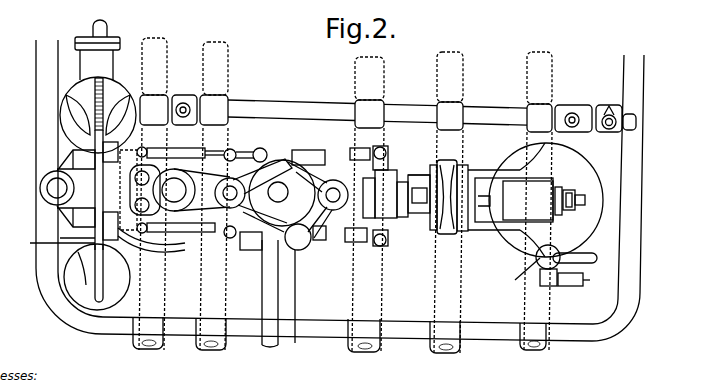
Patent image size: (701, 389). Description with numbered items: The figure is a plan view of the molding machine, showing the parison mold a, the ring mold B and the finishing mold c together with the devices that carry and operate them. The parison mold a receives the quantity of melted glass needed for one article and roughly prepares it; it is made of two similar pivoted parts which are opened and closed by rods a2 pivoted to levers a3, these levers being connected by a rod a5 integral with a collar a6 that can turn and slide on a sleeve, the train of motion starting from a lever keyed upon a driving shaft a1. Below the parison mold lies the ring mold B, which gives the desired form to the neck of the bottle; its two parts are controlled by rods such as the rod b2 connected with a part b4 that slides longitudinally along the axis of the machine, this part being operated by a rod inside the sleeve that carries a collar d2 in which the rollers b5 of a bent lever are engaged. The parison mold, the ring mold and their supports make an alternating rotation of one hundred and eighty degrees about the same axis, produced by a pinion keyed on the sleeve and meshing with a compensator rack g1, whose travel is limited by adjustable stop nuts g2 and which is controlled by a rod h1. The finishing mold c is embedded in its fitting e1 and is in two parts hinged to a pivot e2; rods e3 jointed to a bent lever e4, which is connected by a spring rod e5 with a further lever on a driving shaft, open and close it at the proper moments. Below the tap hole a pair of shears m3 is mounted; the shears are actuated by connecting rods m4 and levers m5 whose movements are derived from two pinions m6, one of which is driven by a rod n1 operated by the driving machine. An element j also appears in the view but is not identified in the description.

The parison mold a is at (286, 160).
The driving shaft a1 is at (337, 243).
The rods a2 is at (325, 253).
The levers a3 is at (418, 170).
The rod a5 is at (432, 178).
The collar a6 is at (470, 166).
The ring mold B is at (360, 165).
The rod b2 is at (368, 244).
The sliding part b4 is at (391, 194).
The rollers b5 is at (566, 202).
The finishing mold c is at (539, 200).
The collar d2 is at (582, 188).
The fitting e1 is at (378, 80).
The pivot e2 is at (458, 78).
The rods e3 is at (160, 62).
The bent lever e4 is at (222, 62).
The spring rod e5 is at (548, 74).
The compensator rack g1 is at (102, 95).
The stop nuts g2 is at (76, 37).
The rod h1 is at (106, 28).
The connecting bar j is at (300, 255).
The shears m3 is at (236, 160).
The connecting rods m4 is at (160, 258).
The levers m5 is at (148, 284).
The pinions m6 is at (118, 192).
The rod n1 is at (53, 242).